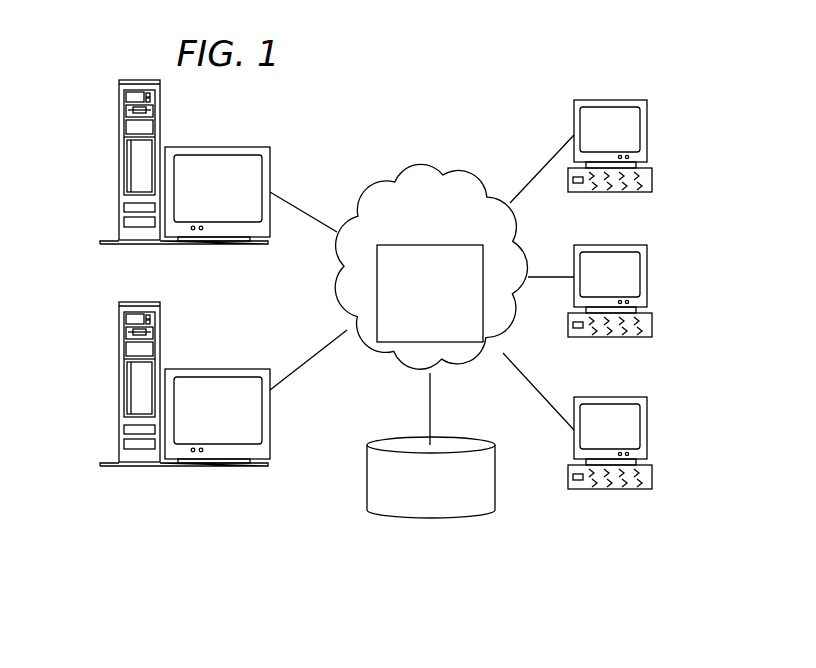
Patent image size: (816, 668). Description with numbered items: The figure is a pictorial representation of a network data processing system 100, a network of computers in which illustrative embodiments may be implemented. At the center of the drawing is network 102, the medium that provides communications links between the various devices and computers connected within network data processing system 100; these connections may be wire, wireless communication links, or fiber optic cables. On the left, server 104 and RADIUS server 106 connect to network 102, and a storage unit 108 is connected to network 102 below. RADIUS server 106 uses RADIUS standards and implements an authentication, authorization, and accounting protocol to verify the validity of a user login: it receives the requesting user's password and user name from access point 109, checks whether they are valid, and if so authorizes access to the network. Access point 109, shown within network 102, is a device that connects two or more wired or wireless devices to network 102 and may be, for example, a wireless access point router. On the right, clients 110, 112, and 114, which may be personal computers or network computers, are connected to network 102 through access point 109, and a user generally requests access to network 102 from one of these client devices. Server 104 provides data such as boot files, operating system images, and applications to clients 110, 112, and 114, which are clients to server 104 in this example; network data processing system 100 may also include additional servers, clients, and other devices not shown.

The network data processing system 100 is at (478, 113).
The network 102 is at (402, 161).
The server 104 is at (118, 163).
The RADIUS server 106 is at (118, 385).
The storage unit 108 is at (413, 520).
The access point 109 is at (412, 323).
The client 110 is at (647, 131).
The client 112 is at (647, 277).
The client 114 is at (647, 430).